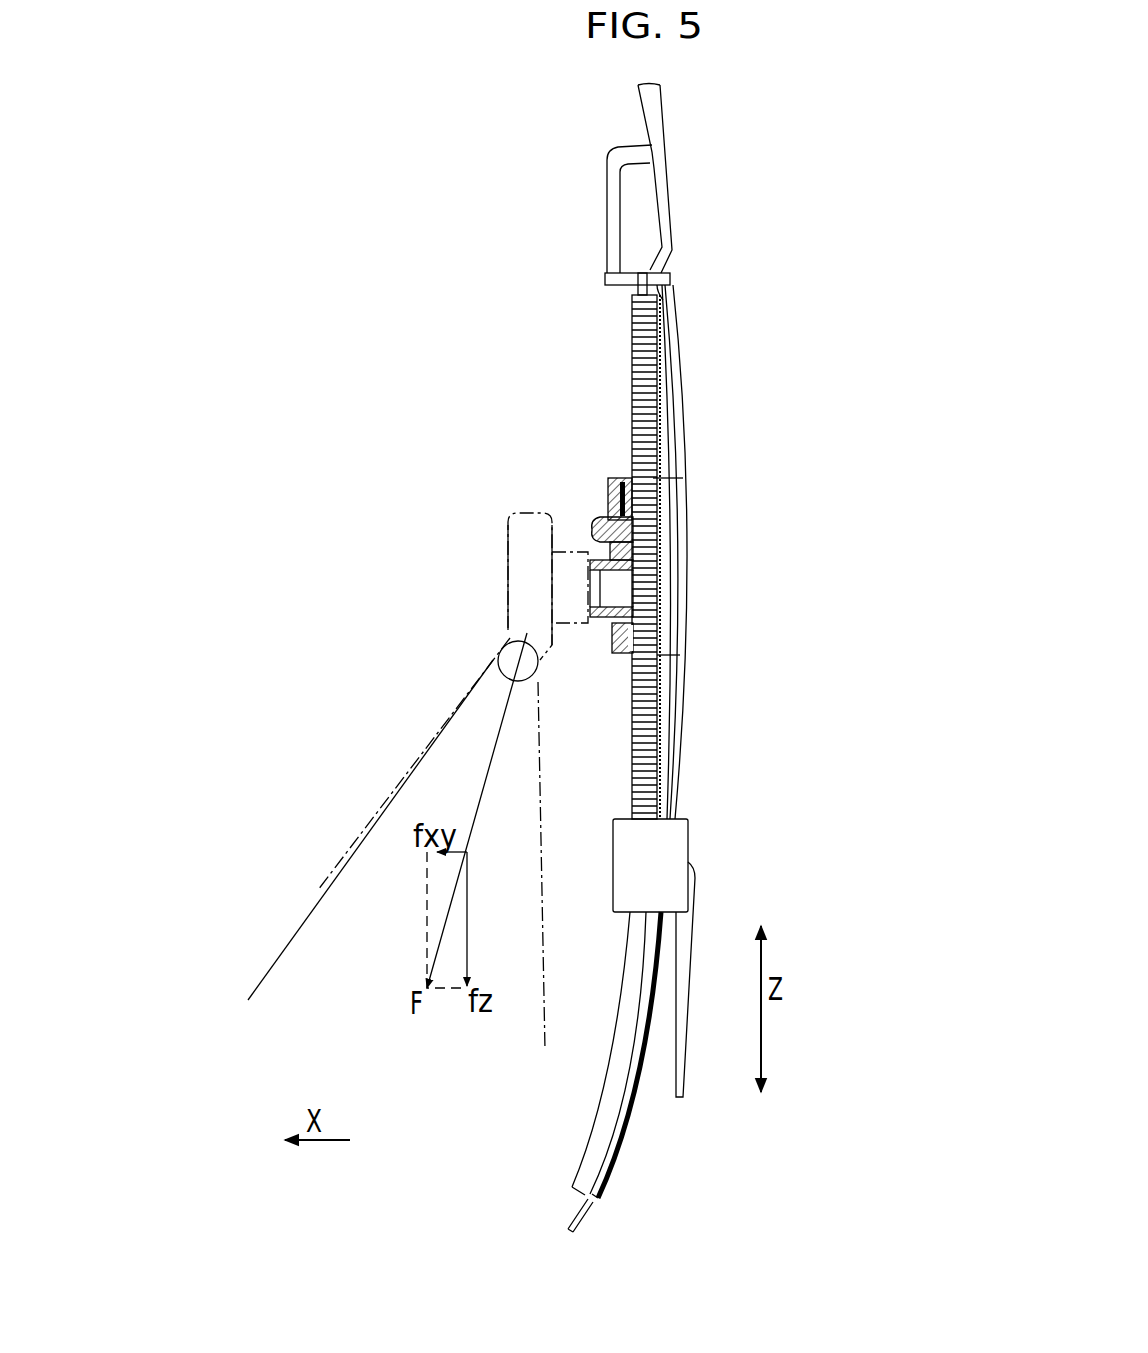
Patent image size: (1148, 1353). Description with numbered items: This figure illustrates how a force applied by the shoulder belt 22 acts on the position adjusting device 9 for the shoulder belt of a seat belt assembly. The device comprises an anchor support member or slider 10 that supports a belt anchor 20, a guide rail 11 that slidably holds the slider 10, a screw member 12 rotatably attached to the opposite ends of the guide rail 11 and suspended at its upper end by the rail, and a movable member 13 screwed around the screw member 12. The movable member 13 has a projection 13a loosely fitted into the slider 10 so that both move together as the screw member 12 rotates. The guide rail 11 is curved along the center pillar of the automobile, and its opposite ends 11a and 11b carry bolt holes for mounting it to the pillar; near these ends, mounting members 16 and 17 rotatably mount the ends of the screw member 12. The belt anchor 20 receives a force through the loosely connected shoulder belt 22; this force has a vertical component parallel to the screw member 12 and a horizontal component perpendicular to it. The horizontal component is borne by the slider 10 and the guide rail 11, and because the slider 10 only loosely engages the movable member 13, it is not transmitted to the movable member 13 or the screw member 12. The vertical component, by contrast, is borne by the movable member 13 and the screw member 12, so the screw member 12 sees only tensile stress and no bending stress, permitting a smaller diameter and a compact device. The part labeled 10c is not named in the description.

The position adjusting device 9 is at (748, 580).
The anchor support member (slider) 10 is at (622, 664).
The bushing 10c is at (600, 627).
The guide rail 11 is at (687, 413).
The end of guide rail 11a is at (672, 183).
The end of guide rail 11b is at (683, 1097).
The screw member 12 is at (680, 725).
The movable member 13 is at (575, 532).
The projection 13a is at (602, 517).
The mounting member 16 is at (613, 893).
The mounting member 17 is at (607, 225).
The belt anchor 20 is at (510, 510).
The shoulder belt 22 is at (405, 780).